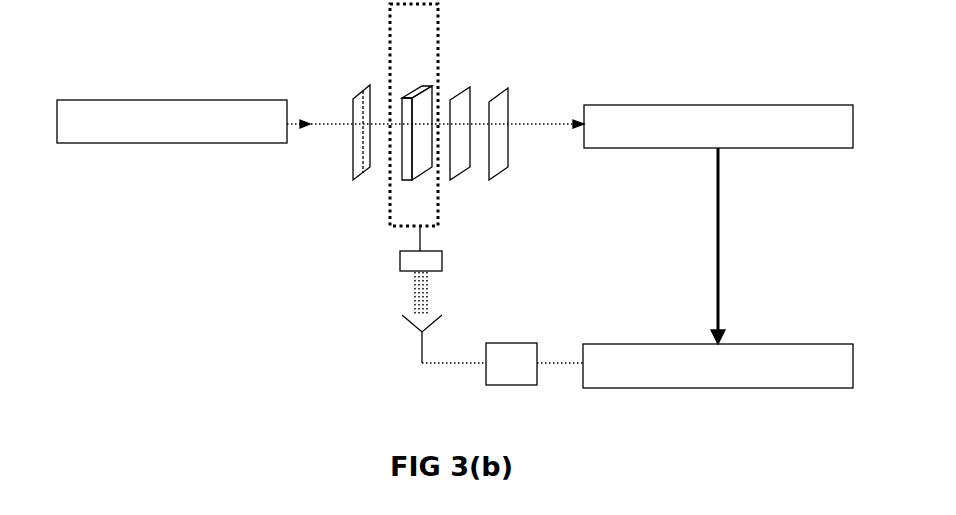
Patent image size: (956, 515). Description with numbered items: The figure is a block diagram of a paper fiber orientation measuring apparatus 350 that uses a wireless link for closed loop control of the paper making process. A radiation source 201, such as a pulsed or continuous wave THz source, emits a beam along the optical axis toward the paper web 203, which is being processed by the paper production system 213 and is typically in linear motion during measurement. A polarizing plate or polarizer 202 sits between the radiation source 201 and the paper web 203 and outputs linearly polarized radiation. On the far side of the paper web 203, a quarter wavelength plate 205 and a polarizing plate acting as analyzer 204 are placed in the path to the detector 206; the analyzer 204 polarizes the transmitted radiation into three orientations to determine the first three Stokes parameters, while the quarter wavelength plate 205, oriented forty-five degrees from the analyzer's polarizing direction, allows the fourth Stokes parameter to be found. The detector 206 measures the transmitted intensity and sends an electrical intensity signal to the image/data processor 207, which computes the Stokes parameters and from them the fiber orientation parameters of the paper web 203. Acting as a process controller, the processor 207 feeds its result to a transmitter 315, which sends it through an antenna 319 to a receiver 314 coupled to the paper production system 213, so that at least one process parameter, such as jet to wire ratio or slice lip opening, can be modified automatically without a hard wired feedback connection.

The radiation source 201 is at (220, 100).
The polarizing plate (polarizer) 202 is at (360, 95).
The paper web 203 is at (413, 96).
The polarizing plate (analyzer) 204 is at (498, 100).
The quarter wavelength plate 205 is at (468, 98).
The detector 206 is at (665, 105).
The image/data processor 207 is at (790, 344).
The paper production system 213 is at (389, 208).
The receiver 314 is at (403, 258).
The transmitter 315 is at (505, 385).
The antenna 319 is at (420, 350).
The paper fiber orientation measuring apparatus 350 is at (290, 421).